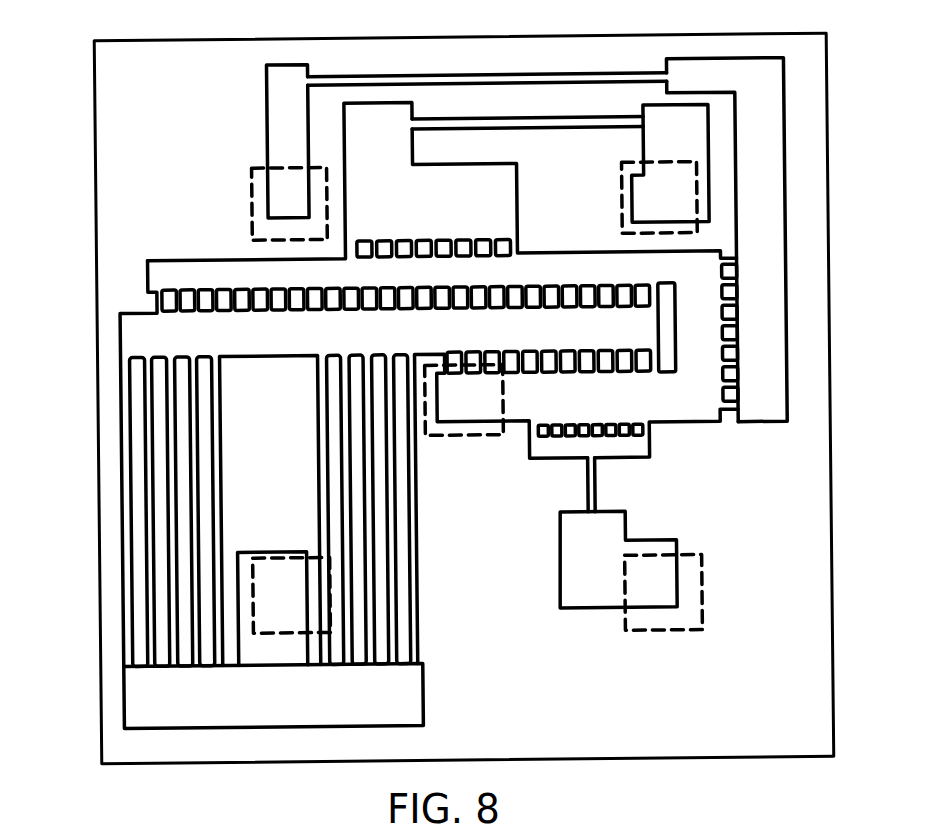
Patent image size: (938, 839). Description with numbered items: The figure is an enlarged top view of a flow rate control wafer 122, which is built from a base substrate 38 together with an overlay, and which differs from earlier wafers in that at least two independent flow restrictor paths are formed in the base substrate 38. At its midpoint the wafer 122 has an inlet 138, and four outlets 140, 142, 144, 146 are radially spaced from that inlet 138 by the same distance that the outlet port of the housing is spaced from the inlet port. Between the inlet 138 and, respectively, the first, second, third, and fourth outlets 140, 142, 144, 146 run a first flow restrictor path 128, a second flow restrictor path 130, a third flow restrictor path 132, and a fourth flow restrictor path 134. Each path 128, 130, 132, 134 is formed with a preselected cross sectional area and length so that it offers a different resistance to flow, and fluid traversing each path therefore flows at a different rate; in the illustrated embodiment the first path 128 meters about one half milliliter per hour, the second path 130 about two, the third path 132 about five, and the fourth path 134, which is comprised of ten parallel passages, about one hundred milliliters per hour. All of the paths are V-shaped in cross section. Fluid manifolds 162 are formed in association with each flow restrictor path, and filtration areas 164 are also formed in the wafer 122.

The wafer 122 is at (170, 66).
The third flow restrictor path 132 is at (392, 75).
The base substrate 38 is at (531, 47).
The second flow restrictor path 130 is at (588, 121).
The second wafer outlet 142 is at (700, 237).
The third wafer outlet 144 is at (255, 190).
The fluid manifolds 162 is at (756, 138).
The fourth flow restrictor path 134 is at (179, 507).
The fourth wafer outlet 146 is at (283, 568).
The inlet 138 is at (481, 433).
The first flow restrictor path 128 is at (594, 485).
The first wafer outlet 140 is at (691, 592).
The filtration areas 164 is at (403, 290).